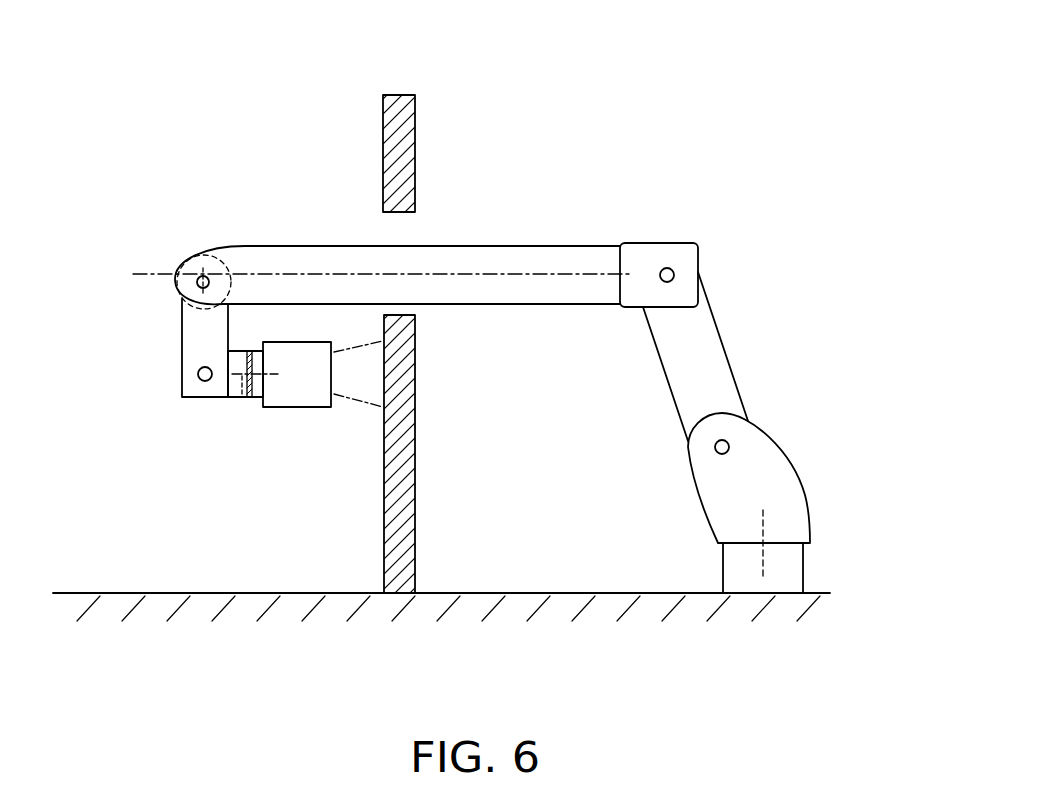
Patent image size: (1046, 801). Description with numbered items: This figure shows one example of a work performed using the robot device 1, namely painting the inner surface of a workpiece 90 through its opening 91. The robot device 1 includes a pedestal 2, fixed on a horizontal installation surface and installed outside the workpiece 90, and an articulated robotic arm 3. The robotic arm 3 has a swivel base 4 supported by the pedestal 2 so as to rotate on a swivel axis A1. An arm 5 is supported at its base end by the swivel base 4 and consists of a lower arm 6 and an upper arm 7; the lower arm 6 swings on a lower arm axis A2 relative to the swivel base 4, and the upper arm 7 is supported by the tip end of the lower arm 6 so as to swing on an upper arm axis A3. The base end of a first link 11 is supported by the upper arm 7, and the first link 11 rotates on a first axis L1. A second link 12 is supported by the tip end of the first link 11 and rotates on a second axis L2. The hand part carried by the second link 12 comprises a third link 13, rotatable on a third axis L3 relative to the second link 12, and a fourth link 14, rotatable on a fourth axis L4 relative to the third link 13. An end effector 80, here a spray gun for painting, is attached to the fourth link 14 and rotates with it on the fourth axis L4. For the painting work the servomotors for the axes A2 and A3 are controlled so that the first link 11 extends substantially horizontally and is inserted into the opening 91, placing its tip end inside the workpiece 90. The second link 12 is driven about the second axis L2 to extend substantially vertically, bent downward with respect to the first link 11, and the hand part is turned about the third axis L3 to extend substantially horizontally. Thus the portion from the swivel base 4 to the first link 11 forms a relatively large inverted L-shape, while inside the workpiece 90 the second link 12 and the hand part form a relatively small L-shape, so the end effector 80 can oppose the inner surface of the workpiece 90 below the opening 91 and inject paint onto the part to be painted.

The robot device 1 is at (817, 153).
The pedestal 2 is at (807, 575).
The articulated robotic arm 3 is at (670, 178).
The swivel base 4 is at (807, 490).
The arm 5 is at (717, 327).
The lower arm 6 is at (720, 367).
The upper arm 7 is at (777, 320).
The first link 11 is at (320, 246).
The second link 12 is at (182, 350).
The third link 13 is at (233, 400).
The fourth link 14 is at (253, 400).
The end effector 80 is at (313, 407).
The workpiece 90 is at (415, 530).
The opening 91 is at (398, 213).
The swivel axis A1 is at (763, 553).
The lower arm axis A2 is at (728, 438).
The upper arm axis A3 is at (668, 267).
The first axis L1 is at (548, 274).
The second axis L2 is at (185, 310).
The third axis L3 is at (205, 382).
The fourth axis L4 is at (242, 397).